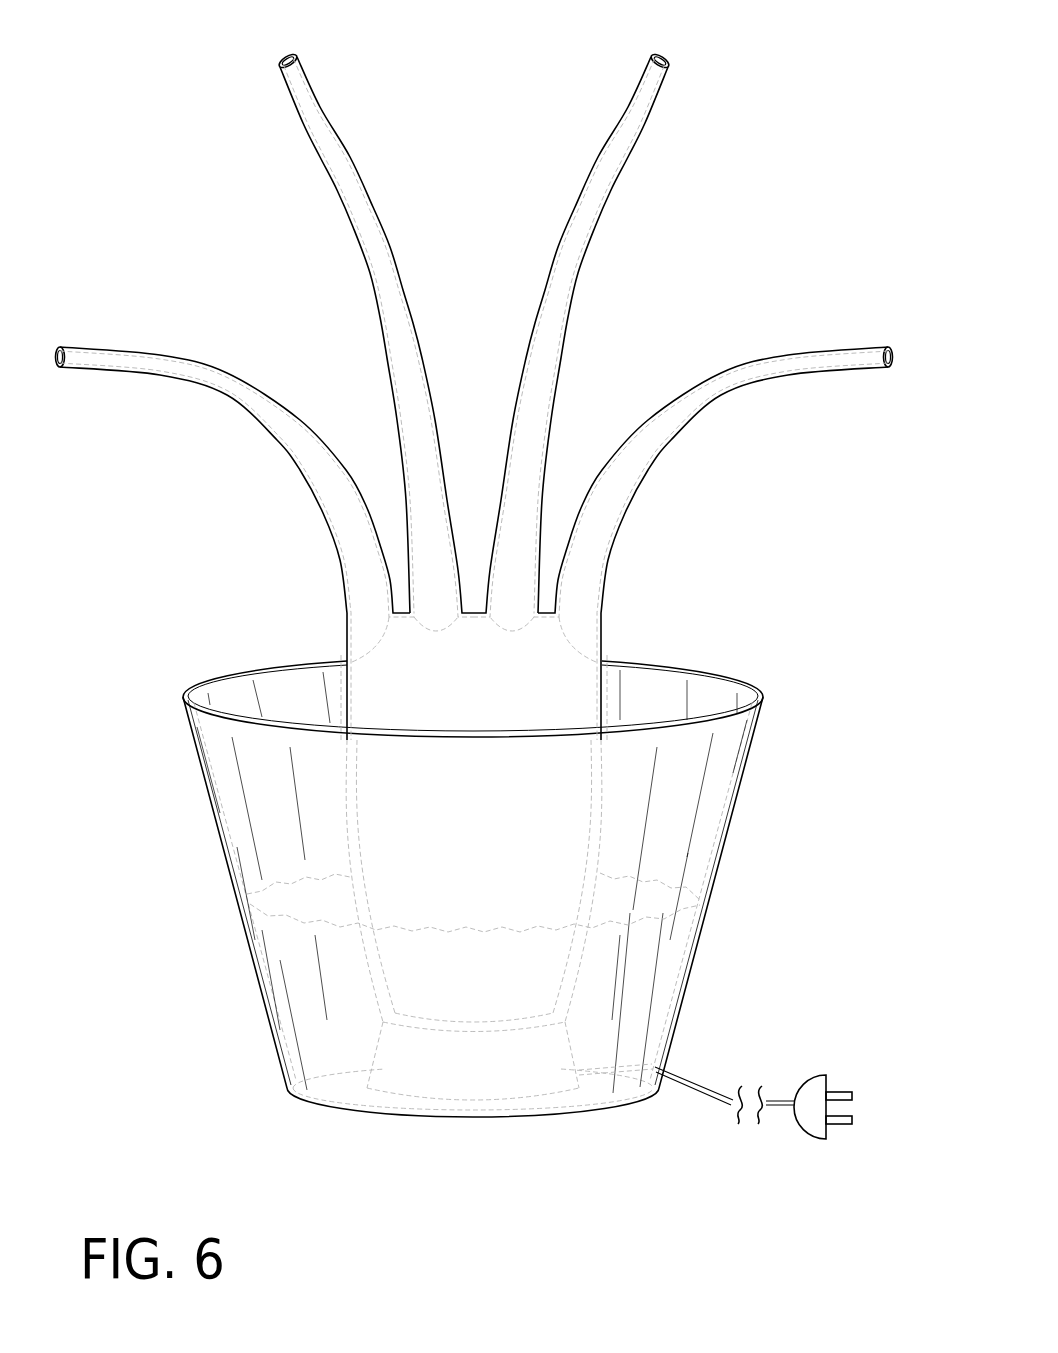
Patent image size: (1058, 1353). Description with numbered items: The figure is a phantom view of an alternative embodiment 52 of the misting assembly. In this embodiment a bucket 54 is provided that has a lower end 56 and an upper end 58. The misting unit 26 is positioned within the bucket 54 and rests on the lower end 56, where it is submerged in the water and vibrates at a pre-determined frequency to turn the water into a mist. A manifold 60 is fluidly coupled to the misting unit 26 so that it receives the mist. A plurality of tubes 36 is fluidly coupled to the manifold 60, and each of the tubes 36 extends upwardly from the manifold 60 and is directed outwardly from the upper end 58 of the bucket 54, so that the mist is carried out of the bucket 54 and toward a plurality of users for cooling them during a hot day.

The alternative embodiment 52 is at (474, 614).
The tubes 36 is at (360, 205).
The upper end 58 is at (740, 683).
The bucket 54 is at (725, 853).
The manifold 60 is at (353, 812).
The misting unit 26 is at (380, 1050).
The lower end 56 is at (637, 1103).